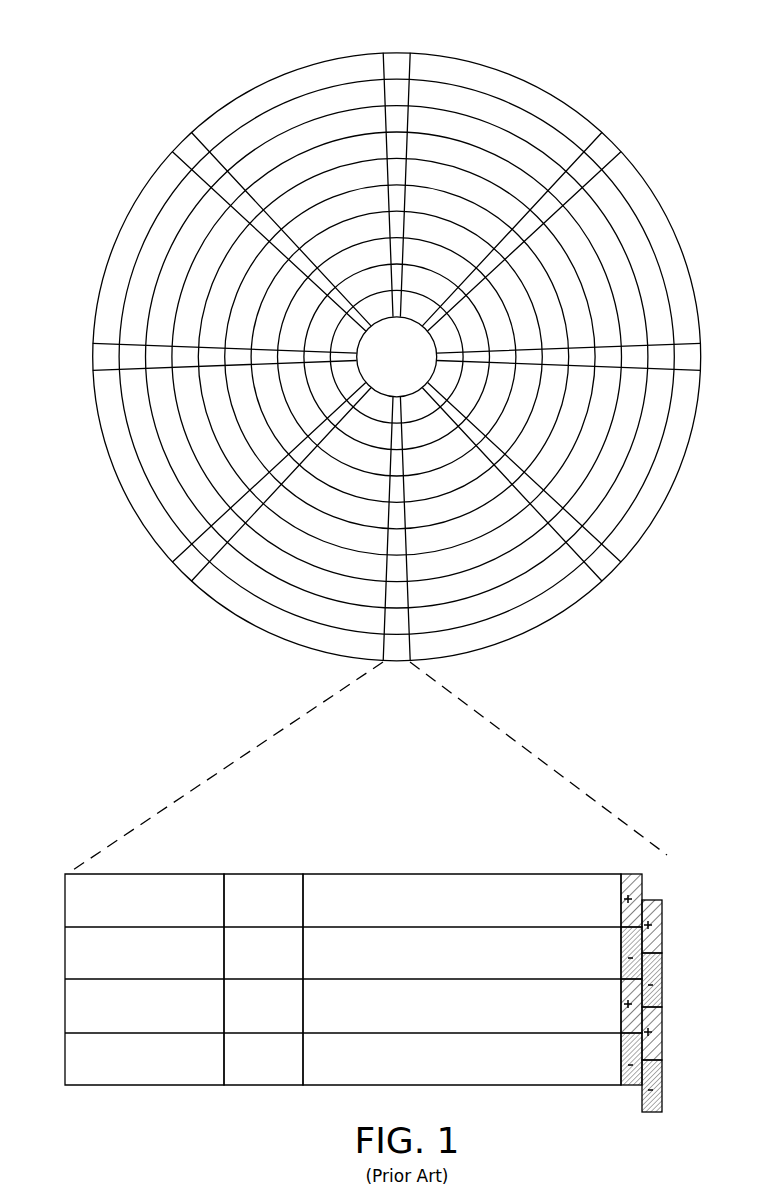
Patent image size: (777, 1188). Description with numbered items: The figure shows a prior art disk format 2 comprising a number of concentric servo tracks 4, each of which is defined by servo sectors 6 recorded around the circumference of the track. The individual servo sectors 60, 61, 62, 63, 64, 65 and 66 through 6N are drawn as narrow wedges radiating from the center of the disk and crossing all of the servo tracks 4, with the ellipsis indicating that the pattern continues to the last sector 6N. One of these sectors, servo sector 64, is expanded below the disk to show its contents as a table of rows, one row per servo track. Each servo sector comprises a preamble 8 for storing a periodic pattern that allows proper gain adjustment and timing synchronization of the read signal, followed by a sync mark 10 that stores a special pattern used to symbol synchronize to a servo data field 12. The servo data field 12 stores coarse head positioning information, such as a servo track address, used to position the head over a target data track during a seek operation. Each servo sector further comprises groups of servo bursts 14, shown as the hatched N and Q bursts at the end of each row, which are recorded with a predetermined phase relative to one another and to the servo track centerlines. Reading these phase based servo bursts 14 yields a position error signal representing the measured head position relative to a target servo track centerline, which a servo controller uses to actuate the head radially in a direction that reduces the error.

The disk format 2 is at (173, 59).
The servo tracks 4 is at (521, 98).
The servo sectors 6 is at (395, 371).
The servo sector 60 is at (398, 64).
The servo sector 61 is at (604, 150).
The servo sector 62 is at (693, 358).
The servo sector 63 is at (607, 573).
The servo sector 64 is at (262, 737).
The servo sector 65 is at (184, 573).
The servo sector 66 is at (98, 357).
The servo sector 6N is at (186, 151).
The preamble 8 is at (152, 873).
The sync mark 10 is at (267, 873).
The servo data field 12 is at (455, 873).
The servo bursts 14 is at (655, 872).